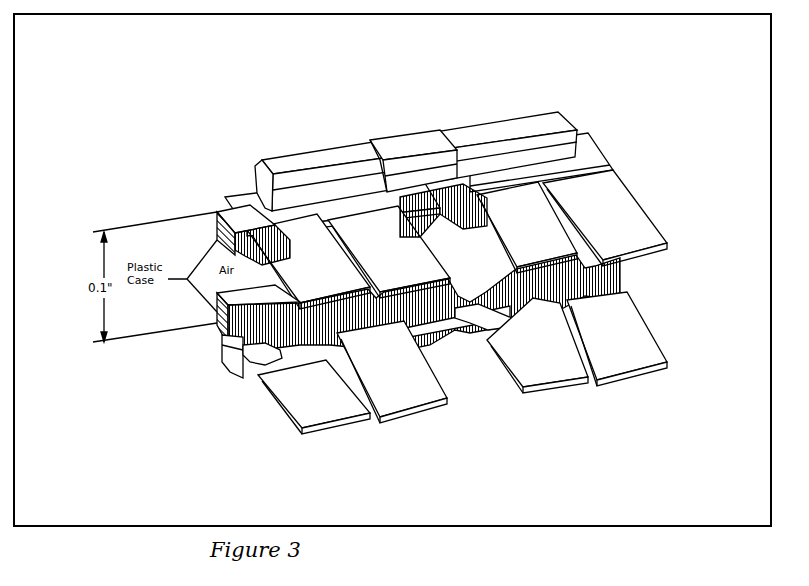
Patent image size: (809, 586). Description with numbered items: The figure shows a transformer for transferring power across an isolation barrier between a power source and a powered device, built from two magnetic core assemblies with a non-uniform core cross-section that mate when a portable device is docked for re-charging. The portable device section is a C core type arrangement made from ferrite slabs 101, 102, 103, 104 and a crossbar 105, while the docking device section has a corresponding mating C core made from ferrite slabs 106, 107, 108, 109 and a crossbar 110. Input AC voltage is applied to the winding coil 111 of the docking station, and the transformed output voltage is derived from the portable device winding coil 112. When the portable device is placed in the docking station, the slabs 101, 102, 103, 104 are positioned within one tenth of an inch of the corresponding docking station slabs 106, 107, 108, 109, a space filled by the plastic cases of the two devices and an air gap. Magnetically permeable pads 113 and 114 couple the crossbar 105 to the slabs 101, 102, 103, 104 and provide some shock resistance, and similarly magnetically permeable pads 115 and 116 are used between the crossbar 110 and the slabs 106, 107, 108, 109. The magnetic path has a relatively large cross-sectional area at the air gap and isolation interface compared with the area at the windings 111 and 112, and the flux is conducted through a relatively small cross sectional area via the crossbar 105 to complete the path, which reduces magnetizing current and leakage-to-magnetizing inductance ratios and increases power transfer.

The ferrite slab 101 is at (281, 189).
The ferrite slab 102 is at (365, 184).
The ferrite slab 103 is at (594, 247).
The ferrite slab 104 is at (626, 210).
The crossbar 105 is at (416, 139).
The ferrite slab 106 is at (307, 419).
The ferrite slab 107 is at (390, 396).
The ferrite slab 108 is at (558, 384).
The ferrite slab 109 is at (643, 381).
The crossbar 110 is at (200, 370).
The winding coil 111 is at (455, 389).
The winding coil 112 is at (410, 131).
The magnetically permeable pad 113 is at (291, 181).
The magnetically permeable pad 114 is at (571, 131).
The magnetically permeable pad 115 is at (221, 410).
The magnetically permeable pad 116 is at (491, 387).